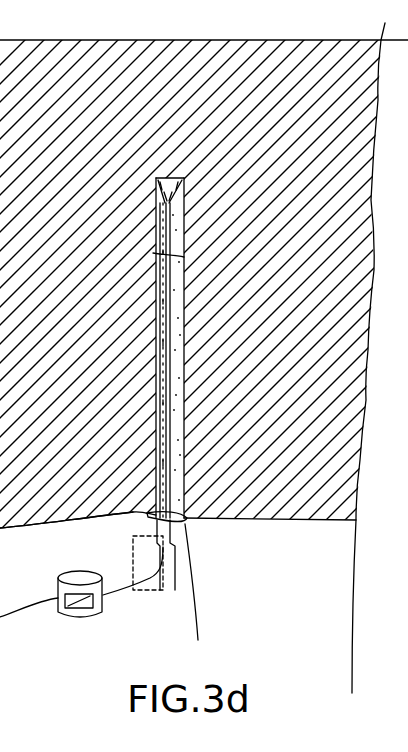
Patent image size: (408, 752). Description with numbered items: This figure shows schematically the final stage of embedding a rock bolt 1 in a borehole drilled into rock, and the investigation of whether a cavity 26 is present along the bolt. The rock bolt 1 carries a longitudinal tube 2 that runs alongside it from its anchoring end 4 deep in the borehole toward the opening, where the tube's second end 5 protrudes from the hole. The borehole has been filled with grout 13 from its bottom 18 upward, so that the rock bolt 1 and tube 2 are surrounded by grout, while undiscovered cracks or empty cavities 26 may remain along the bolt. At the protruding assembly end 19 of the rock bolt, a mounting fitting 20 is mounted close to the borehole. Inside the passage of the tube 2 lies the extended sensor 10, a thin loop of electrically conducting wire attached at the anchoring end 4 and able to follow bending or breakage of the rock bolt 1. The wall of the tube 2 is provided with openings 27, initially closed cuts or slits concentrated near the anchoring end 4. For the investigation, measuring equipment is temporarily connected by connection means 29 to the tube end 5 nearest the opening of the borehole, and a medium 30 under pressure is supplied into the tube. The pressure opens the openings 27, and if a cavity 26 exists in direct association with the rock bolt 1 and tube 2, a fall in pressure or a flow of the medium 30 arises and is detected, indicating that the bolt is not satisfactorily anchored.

The rock bolt 1 is at (186, 407).
The tube 2 is at (157, 325).
The anchoring end 4 is at (226, 138).
The second end 5 is at (155, 548).
The sensor 10 is at (157, 197).
The grout 13 is at (184, 303).
The bottom 18 is at (180, 177).
The assembly end 19 is at (193, 521).
The mounting fitting 20 is at (191, 524).
The cavity 26 is at (178, 214).
The openings 27 is at (168, 284).
The connection means 29 is at (137, 563).
The medium 30 is at (122, 596).